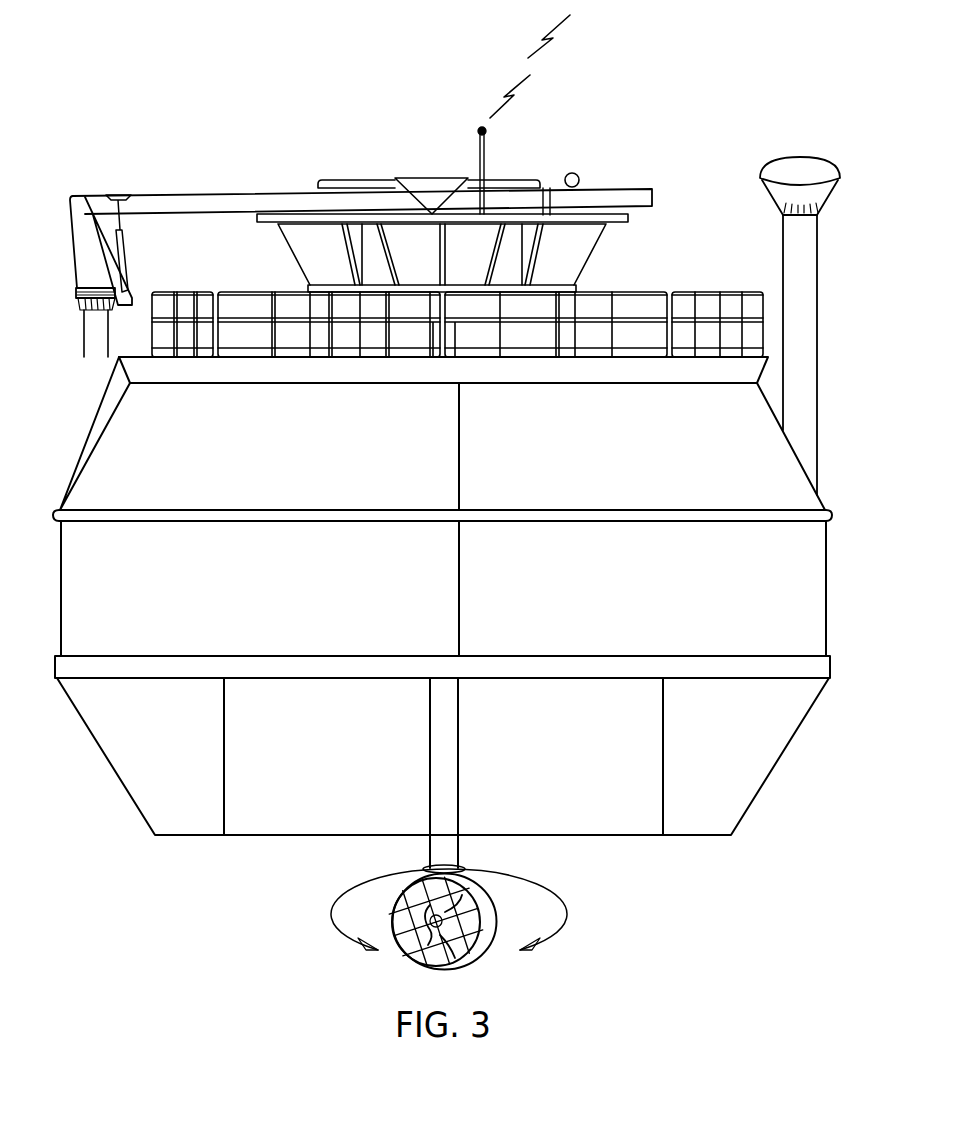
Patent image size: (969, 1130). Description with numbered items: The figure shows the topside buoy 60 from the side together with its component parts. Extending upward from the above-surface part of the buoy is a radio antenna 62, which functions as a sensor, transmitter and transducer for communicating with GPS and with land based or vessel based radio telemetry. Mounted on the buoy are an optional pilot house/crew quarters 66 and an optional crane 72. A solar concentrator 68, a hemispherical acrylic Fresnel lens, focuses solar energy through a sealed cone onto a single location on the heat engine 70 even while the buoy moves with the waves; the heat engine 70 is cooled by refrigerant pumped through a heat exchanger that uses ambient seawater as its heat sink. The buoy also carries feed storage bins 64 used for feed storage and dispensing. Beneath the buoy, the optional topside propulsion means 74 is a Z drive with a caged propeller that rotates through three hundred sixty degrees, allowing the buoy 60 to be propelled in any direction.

The topside buoy 60 is at (618, 122).
The radio antenna 62 is at (478, 146).
The feed storage bins 64 is at (267, 604).
The pilot house/crew quarters 66 is at (582, 256).
The solar concentrator 68 is at (767, 204).
The heat engine 70 is at (635, 466).
The crane 72 is at (200, 196).
The topside propulsion means 74 is at (485, 948).